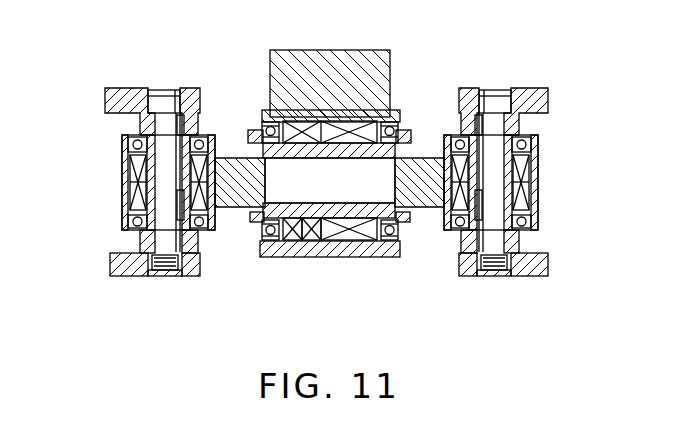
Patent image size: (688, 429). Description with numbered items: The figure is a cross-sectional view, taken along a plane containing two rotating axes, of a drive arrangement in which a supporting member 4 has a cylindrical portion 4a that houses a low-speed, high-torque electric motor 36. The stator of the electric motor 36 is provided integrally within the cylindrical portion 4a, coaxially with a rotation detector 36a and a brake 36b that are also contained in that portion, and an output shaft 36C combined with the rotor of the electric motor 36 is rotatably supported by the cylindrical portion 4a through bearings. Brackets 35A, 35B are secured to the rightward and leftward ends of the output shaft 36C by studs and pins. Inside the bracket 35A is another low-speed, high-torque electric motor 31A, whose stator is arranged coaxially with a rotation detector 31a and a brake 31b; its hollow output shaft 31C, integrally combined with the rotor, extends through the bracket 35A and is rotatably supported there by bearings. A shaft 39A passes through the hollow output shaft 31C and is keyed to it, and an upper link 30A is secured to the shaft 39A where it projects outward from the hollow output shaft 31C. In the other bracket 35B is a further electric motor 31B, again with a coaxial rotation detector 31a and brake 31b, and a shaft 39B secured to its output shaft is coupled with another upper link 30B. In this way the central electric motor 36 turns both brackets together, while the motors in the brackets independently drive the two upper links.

The supporting member 4 is at (332, 62).
The cylindrical portion 4a is at (370, 246).
The upper link 30A is at (525, 88).
The upper link 30B is at (128, 87).
The electric motor 31A is at (527, 195).
The electric motor 31B is at (132, 193).
The hollow output shaft 31C is at (515, 234).
The rotation detector 31a is at (133, 168).
The brake 31b is at (132, 156).
The bracket 35A is at (425, 158).
The bracket 35B is at (245, 158).
The electric motor 36 is at (348, 238).
The rotation detector 36a is at (313, 238).
The brake 36b is at (284, 238).
The output shaft 36C is at (318, 153).
The shaft 39A is at (487, 105).
The shaft 39B is at (173, 103).